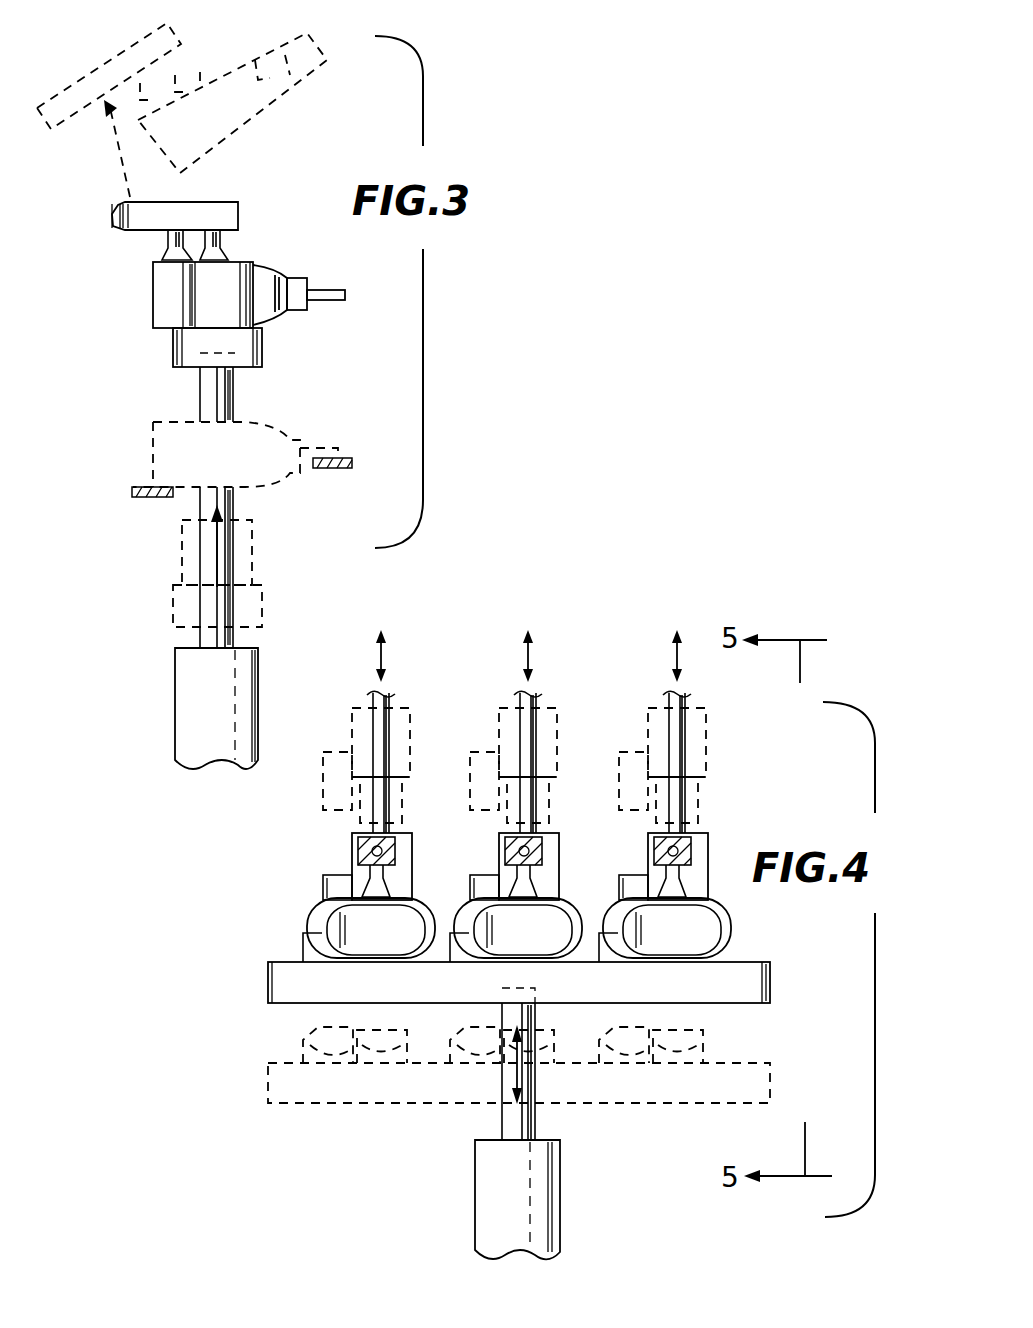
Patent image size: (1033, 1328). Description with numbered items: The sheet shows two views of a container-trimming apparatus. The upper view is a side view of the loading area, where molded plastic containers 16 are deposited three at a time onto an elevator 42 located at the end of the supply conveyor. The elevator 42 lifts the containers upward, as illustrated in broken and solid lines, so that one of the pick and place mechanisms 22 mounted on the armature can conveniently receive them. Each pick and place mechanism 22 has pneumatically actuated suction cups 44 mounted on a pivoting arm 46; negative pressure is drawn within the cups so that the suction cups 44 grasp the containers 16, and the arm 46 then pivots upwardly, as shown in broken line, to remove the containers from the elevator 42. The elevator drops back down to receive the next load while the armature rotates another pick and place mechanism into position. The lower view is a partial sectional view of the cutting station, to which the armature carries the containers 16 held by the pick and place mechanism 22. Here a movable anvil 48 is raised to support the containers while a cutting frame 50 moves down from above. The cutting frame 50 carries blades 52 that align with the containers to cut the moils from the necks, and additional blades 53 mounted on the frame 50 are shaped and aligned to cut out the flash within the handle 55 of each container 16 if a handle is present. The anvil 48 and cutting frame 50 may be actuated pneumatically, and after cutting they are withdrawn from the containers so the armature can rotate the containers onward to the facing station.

In FIG. 3, the molded plastic container 16 is at (160, 288).
In FIG. 4, the molded plastic container 16 is at (703, 925).
In FIG. 3, the pick and place mechanism 22 is at (215, 203).
In FIG. 4, the pick and place mechanism 22 is at (687, 838).
In FIG. 3, the elevator 42 is at (250, 348).
In FIG. 3, the suction cup 44 is at (225, 252).
In FIG. 4, the suction cup 44 is at (658, 888).
In FIG. 3, the pivoting arm 46 is at (128, 233).
In FIG. 4, the pivoting arm 46 is at (710, 853).
In FIG. 4, the movable anvil 48 is at (732, 992).
In FIG. 4, the cutting frame 50 is at (652, 868).
In FIG. 4, the blade 52 is at (713, 783).
In FIG. 4, the additional blade 53 is at (625, 782).
In FIG. 4, the handle 55 is at (577, 928).